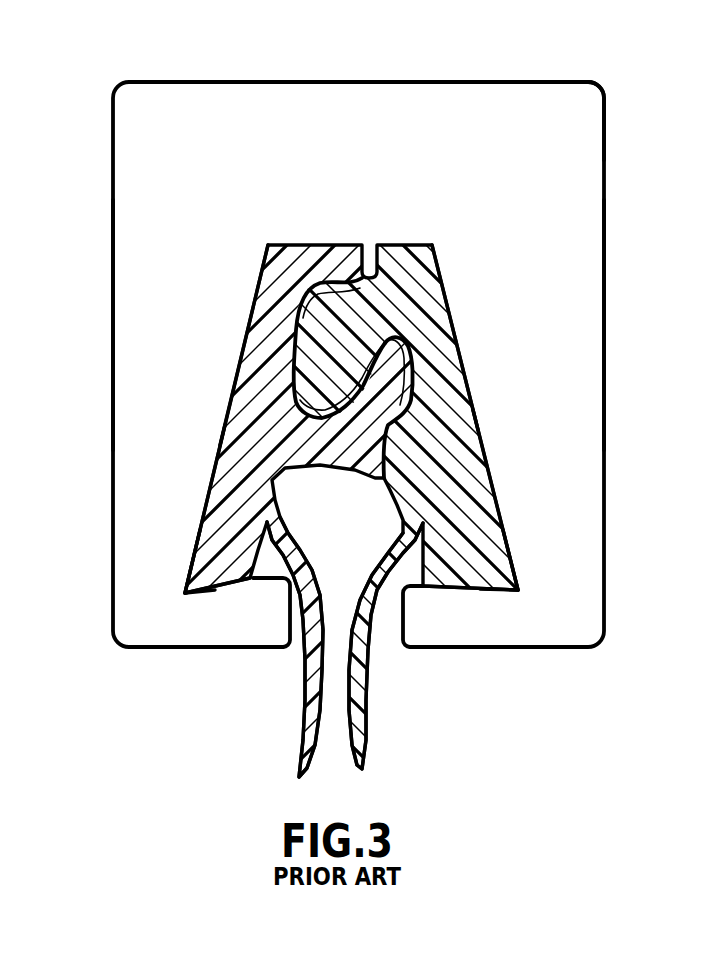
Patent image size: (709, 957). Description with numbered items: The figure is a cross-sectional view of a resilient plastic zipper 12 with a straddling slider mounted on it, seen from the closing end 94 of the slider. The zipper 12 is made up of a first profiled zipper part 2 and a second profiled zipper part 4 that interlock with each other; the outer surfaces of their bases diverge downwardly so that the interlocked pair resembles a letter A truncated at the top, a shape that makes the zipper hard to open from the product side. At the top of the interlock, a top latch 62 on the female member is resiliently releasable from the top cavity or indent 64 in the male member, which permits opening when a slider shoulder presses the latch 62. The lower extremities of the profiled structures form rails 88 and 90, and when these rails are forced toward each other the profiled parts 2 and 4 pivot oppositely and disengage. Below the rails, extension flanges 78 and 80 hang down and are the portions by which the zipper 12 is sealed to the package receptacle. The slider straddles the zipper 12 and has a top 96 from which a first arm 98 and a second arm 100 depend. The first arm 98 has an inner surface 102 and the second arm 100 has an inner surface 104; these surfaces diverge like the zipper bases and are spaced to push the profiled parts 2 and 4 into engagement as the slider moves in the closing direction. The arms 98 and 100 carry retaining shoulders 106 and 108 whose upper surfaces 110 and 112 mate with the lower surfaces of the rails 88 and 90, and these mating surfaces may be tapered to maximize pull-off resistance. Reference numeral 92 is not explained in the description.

The first profiled zipper part 2 is at (475, 480).
The second profiled zipper part 4 is at (248, 363).
The plastic zipper 12 is at (456, 320).
The top latch 62 is at (360, 250).
The top cavity or indent 64 is at (378, 292).
The extension flange 78 is at (368, 748).
The extension flange 80 is at (300, 745).
The rail 88 is at (500, 572).
The rail 90 is at (203, 572).
The channel 92 is at (545, 80).
The closing end 94 is at (580, 130).
The top 96 is at (302, 92).
The first arm 98 is at (580, 326).
The second arm 100 is at (127, 327).
The inner surface 102 is at (475, 420).
The inner surface 104 is at (215, 445).
The retaining shoulder 106 is at (415, 625).
The retaining shoulder 108 is at (258, 633).
The upper surface 110 is at (493, 593).
The upper surface 112 is at (230, 581).